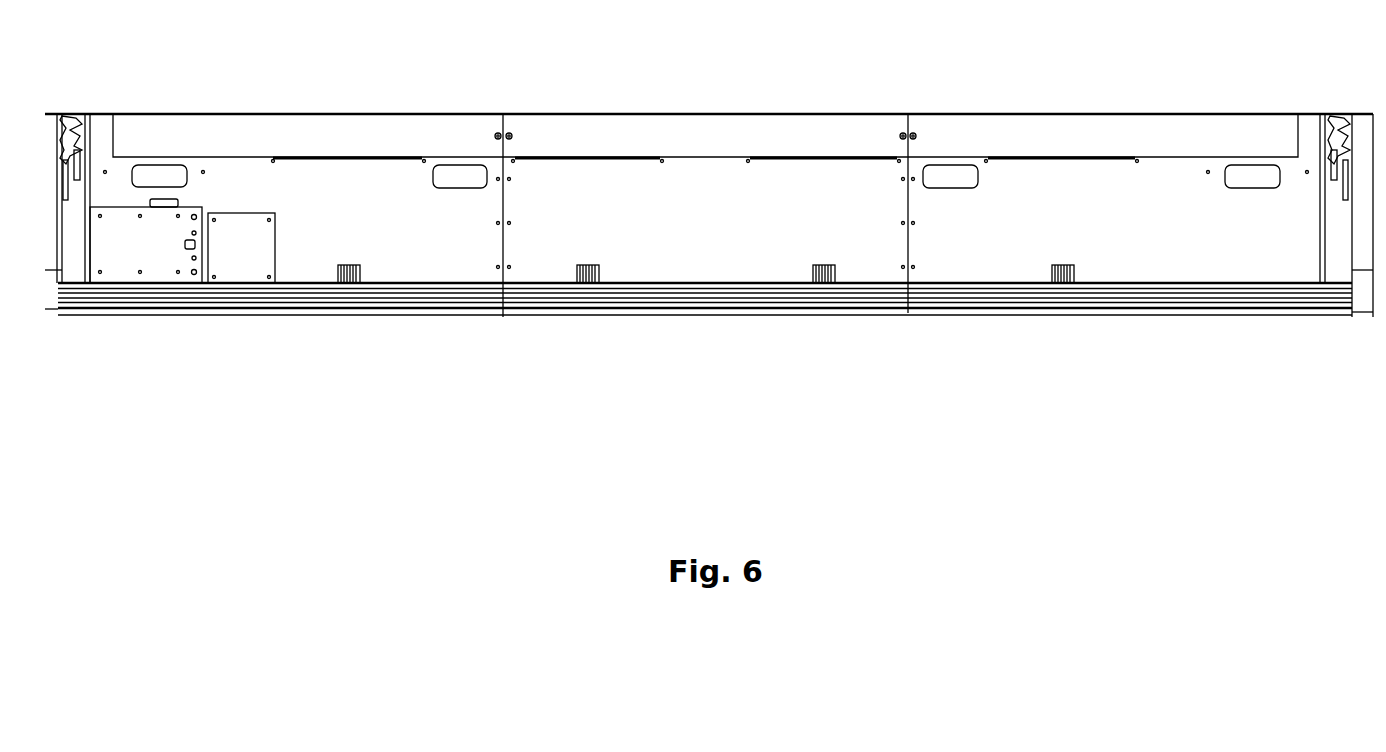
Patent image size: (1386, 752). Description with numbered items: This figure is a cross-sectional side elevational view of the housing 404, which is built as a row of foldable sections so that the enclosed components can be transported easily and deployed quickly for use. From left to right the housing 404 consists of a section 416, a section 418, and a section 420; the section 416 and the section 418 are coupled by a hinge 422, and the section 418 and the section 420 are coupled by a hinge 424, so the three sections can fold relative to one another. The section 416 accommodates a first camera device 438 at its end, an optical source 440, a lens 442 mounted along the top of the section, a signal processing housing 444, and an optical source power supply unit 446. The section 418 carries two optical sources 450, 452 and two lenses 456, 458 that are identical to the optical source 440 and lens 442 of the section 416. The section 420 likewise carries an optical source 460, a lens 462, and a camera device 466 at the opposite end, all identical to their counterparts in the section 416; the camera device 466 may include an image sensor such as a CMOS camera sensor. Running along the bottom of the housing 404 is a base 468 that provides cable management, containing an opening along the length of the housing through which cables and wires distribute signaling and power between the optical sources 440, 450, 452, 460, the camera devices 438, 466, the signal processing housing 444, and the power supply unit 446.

The housing 404 is at (485, 413).
The section 416 is at (335, 332).
The section 418 is at (709, 324).
The section 420 is at (1115, 337).
The hinge 422 is at (503, 114).
The hinge 424 is at (908, 114).
The first camera device 438 is at (65, 118).
The optical source 440 is at (352, 265).
The lens 442 is at (340, 155).
The signal processing housing 444 is at (148, 248).
The optical source power supply unit 446 is at (245, 259).
The optical source 450 is at (590, 265).
The optical source 452 is at (827, 265).
The lens 456 is at (592, 156).
The lens 458 is at (808, 156).
The optical source 460 is at (1065, 265).
The lens 462 is at (1045, 157).
The camera device 466 is at (1340, 112).
The base 468 is at (578, 300).